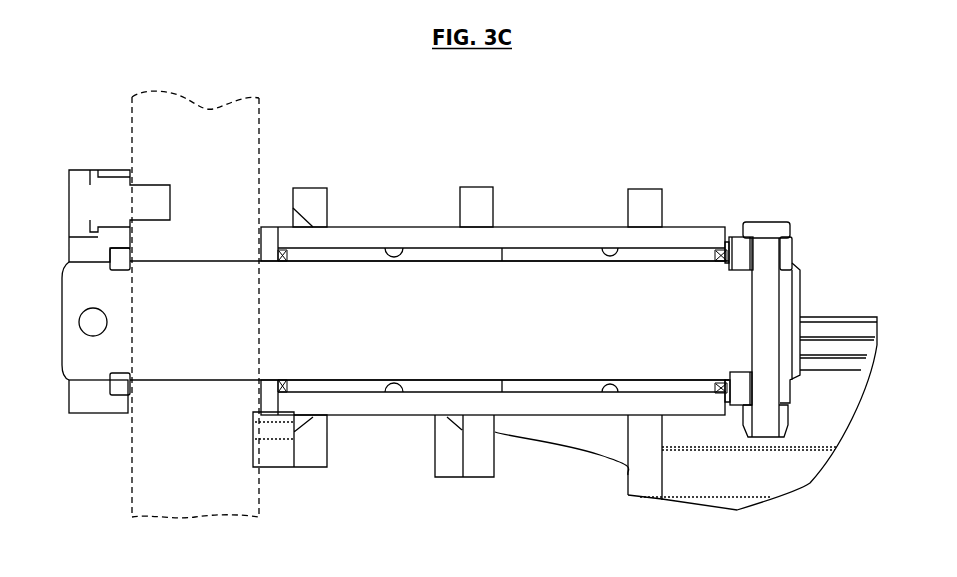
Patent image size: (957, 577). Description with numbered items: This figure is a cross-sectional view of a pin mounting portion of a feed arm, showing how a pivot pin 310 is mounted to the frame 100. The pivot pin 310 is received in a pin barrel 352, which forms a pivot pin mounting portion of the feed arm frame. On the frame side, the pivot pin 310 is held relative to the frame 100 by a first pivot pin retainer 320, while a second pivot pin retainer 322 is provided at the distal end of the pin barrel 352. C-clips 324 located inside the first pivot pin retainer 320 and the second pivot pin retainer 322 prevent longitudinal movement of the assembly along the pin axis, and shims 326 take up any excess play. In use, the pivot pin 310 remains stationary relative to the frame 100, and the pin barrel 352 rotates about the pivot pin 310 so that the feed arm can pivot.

The frame 100 is at (260, 111).
The pivot pin 310 is at (440, 280).
The first pivot pin retainer 320 is at (91, 158).
The second pivot pin retainer 322 is at (793, 216).
The C-clip 324 is at (120, 258).
The shim 326 is at (733, 227).
The pin barrel 352 is at (560, 226).